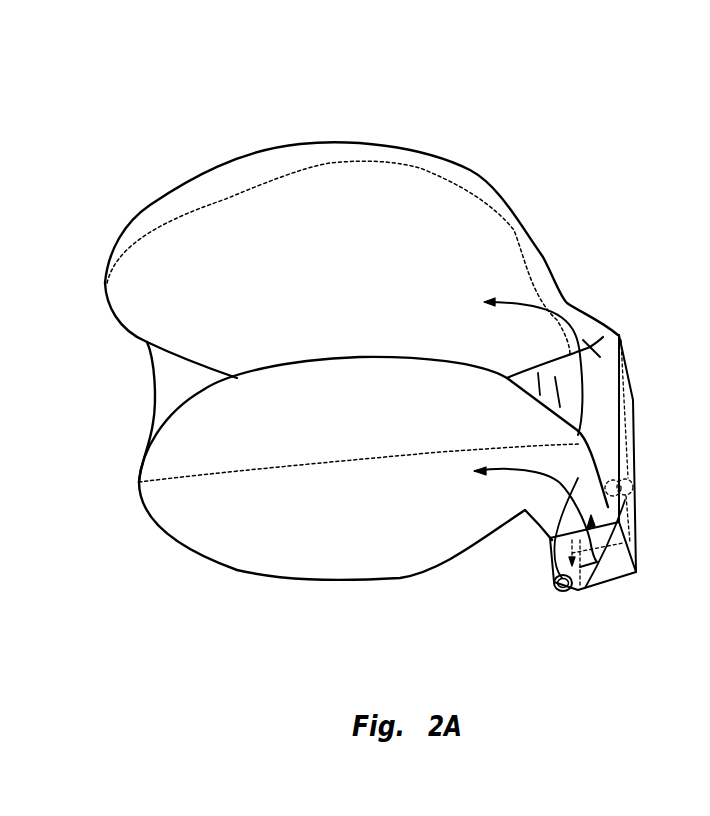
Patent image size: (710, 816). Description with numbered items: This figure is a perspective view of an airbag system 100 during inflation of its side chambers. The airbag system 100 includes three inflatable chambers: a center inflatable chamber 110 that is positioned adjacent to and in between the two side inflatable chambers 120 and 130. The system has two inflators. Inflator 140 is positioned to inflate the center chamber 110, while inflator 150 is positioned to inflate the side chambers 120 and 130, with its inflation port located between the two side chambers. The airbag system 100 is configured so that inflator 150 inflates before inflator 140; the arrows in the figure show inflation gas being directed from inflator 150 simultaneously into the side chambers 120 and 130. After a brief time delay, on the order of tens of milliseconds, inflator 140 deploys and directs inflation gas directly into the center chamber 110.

The airbag system 100 is at (340, 110).
The inflatable chamber (center chamber) 110 is at (167, 398).
The inflatable chamber (side chamber) 120 is at (423, 187).
The inflatable chamber (side chamber) 130 is at (327, 553).
The inflator 140 is at (608, 462).
The inflator 150 is at (549, 592).